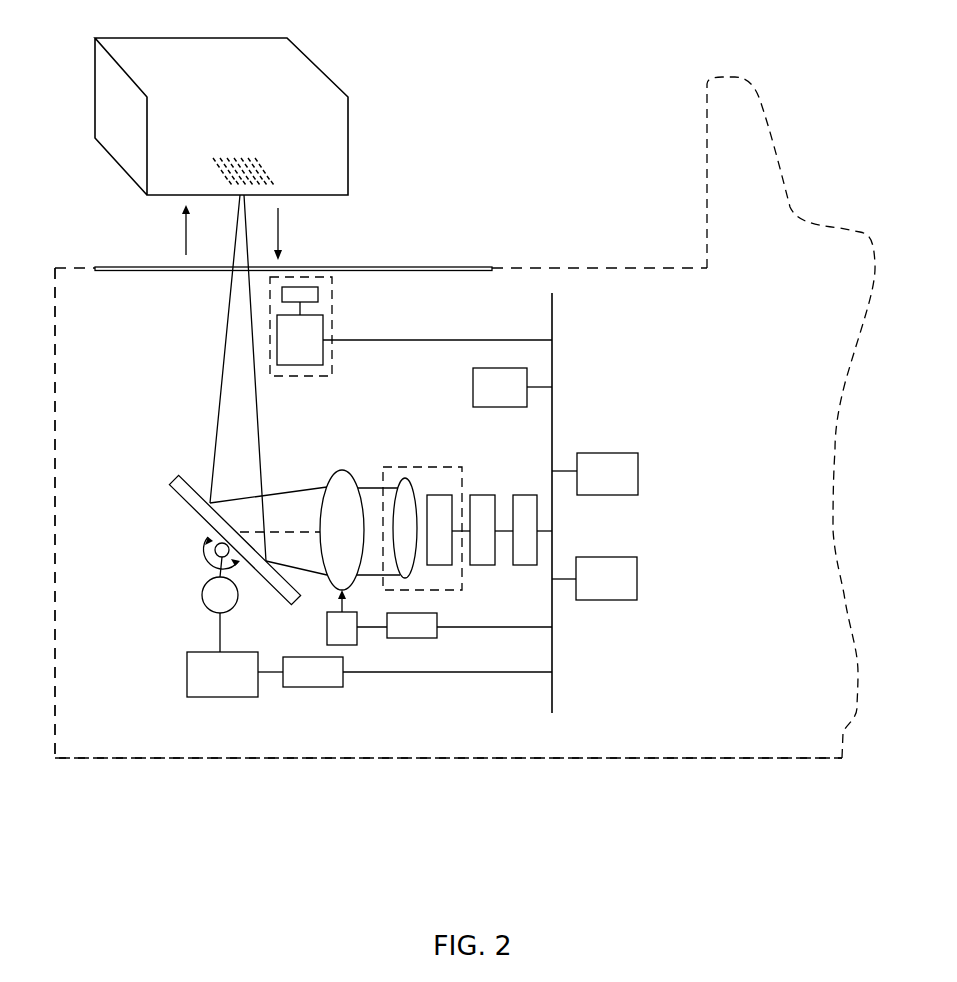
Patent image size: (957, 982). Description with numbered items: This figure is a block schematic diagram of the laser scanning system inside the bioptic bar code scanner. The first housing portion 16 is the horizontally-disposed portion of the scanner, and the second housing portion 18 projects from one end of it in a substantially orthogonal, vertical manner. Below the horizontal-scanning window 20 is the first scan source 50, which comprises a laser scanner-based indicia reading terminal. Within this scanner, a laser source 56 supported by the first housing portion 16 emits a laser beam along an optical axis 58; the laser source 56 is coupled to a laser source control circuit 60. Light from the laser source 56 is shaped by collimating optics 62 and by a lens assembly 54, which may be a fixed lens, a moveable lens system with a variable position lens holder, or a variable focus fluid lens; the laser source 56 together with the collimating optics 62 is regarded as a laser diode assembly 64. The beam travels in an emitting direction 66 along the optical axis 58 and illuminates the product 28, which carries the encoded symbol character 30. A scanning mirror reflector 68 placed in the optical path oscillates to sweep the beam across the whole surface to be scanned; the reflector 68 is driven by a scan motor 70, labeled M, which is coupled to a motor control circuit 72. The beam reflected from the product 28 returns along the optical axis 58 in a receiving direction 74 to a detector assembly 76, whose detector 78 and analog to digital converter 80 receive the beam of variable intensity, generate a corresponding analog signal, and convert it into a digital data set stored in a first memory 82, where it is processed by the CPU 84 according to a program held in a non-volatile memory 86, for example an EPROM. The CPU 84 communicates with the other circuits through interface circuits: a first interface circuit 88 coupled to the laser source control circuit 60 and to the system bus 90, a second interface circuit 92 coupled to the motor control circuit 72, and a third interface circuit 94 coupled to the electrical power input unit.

The first housing portion 16 is at (615, 268).
The second housing portion 18 is at (707, 140).
The horizontal-scanning window 20 is at (357, 252).
The product 28 is at (120, 138).
The encoded symbol character 30 is at (263, 150).
The first scan source 50 is at (139, 319).
The lens assembly 54 is at (330, 478).
The laser source 56 is at (437, 493).
The optical axis 58 is at (238, 383).
The laser source control circuit 60 is at (480, 493).
The collimating optics 62 is at (408, 488).
The laser diode assembly 64 is at (440, 592).
The emitting direction 66 is at (171, 230).
The scanning mirror reflector 68 is at (185, 478).
The scan motor 70 is at (202, 596).
The motor control circuit 72 is at (235, 674).
The receiving direction 74 is at (297, 234).
The detector assembly 76 is at (332, 372).
The detector 78 is at (318, 292).
The analog to digital converter 80 is at (414, 340).
The first memory 82 is at (595, 474).
The CPU 84 is at (512, 387).
The non-volatile memory 86 is at (594, 578).
The first interface circuit 88 is at (518, 495).
The system bus 90 is at (551, 313).
The second interface circuit 92 is at (417, 672).
The third interface circuit 94 is at (454, 625).